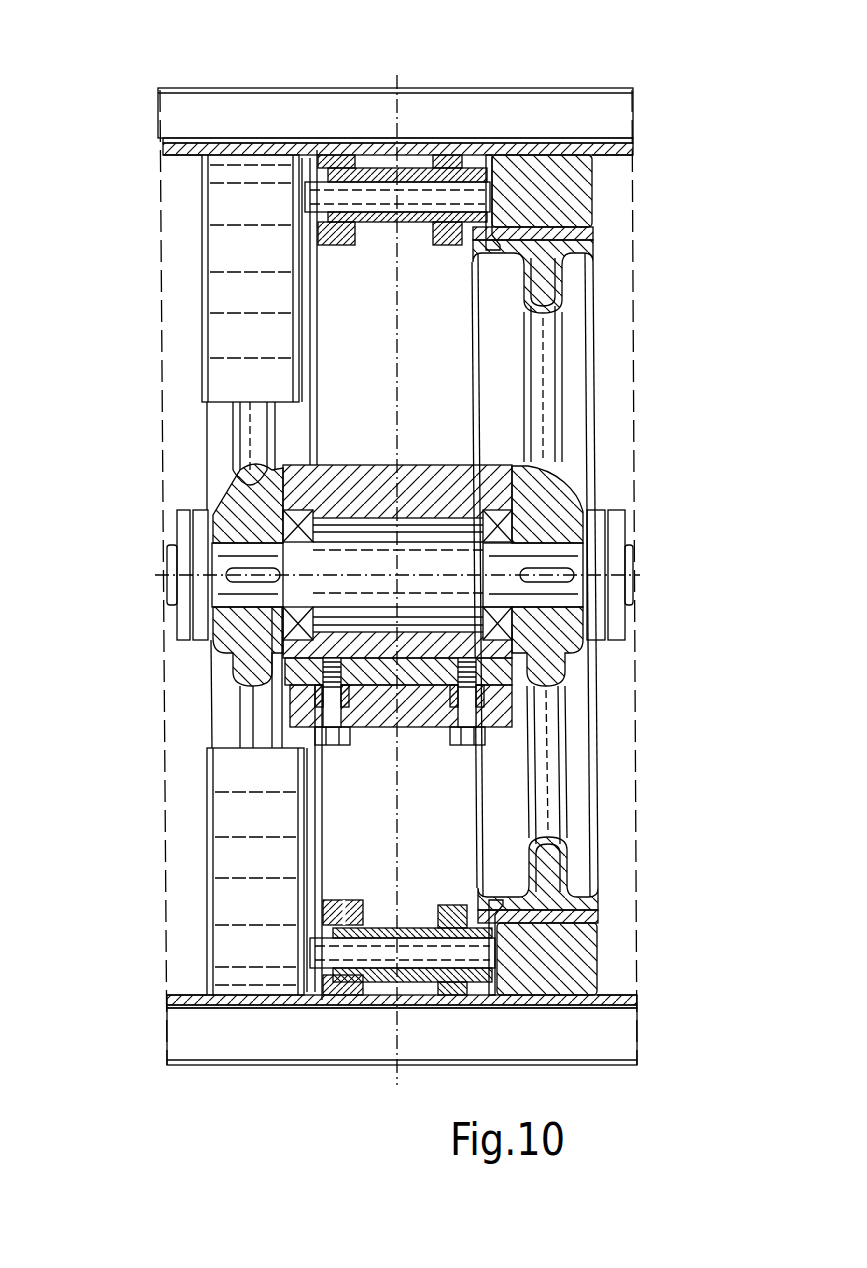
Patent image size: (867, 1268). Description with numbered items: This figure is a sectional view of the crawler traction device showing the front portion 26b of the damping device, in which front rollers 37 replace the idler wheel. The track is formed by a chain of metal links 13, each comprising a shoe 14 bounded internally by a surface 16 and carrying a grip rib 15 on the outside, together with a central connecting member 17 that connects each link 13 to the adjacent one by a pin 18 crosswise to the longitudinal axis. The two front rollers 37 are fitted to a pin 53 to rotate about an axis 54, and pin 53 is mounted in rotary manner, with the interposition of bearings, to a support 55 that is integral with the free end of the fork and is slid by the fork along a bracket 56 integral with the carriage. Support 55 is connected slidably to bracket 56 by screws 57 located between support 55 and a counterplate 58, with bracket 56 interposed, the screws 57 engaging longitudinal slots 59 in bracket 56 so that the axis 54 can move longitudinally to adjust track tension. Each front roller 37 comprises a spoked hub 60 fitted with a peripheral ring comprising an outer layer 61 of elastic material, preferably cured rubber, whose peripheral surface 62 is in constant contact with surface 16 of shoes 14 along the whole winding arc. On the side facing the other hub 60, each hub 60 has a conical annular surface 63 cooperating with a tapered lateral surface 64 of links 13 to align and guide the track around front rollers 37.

The metal link 13 is at (547, 85).
The shoe 14 is at (517, 140).
The grip rib 15 is at (600, 105).
The surface 16 is at (601, 166).
The central connecting member 17 is at (322, 165).
The pin 18 is at (307, 195).
The front portion 26b is at (180, 175).
The front roller 37 is at (205, 326).
The pin 53 is at (540, 555).
The axis 54 is at (632, 575).
The support 55 is at (360, 468).
The bracket 56 is at (387, 705).
The screw 57 is at (337, 720).
The counterplate 58 is at (477, 715).
The longitudinal slot 59 is at (310, 705).
The spoked hub 60 is at (250, 430).
The outer layer 61 is at (222, 218).
The peripheral surface 62 is at (590, 140).
The conical annular surface 63 is at (330, 910).
The tapered lateral surface 64 is at (489, 900).